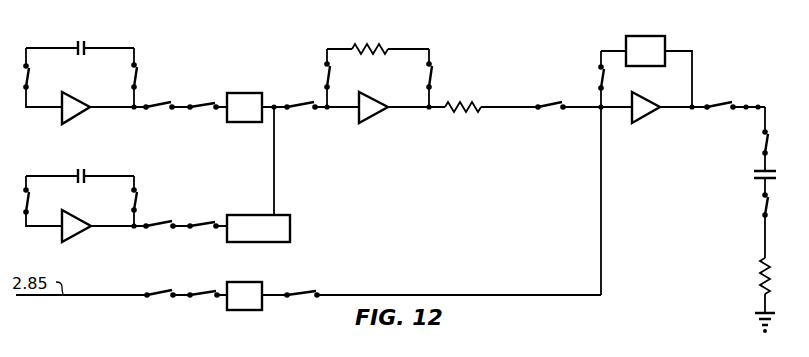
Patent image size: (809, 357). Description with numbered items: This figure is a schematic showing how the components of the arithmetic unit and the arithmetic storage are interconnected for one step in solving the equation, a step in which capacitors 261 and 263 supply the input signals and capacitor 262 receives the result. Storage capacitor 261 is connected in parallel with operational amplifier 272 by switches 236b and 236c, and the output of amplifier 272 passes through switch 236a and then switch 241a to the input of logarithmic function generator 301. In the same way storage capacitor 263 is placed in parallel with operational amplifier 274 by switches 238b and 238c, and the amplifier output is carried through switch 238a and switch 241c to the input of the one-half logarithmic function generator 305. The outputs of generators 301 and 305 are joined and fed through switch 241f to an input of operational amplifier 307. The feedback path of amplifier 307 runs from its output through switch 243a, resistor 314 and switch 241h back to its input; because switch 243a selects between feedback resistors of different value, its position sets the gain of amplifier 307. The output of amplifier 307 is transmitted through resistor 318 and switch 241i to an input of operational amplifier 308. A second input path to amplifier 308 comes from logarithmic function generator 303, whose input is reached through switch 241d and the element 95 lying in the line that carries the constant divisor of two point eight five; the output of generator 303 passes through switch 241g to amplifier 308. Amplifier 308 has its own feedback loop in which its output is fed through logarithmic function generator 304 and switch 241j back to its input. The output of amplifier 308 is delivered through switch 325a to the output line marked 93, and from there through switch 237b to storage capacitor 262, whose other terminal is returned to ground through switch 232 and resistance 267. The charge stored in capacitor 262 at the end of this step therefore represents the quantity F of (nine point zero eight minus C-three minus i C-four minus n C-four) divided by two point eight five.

The storage capacitor 261 is at (86, 46).
The switch 236c is at (32, 78).
The switch 236b is at (139, 78).
The operational amplifier 272 is at (62, 119).
The switch 236a is at (156, 112).
The switch 241a is at (216, 111).
The logarithmic function generator 301 is at (231, 123).
The storage capacitor 263 is at (86, 175).
The switch 238c is at (29, 196).
The switch 238b is at (137, 194).
The operational amplifier 274 is at (77, 221).
The switch 238a is at (153, 228).
The switch 241c is at (208, 228).
The 1/2 logarithmic function generator 305 is at (289, 215).
The switch 95 is at (151, 294).
The switch 241d is at (216, 294).
The logarithmic function generator 303 is at (256, 282).
The switch 241g is at (313, 294).
The switch 241f is at (304, 111).
The switch 241h is at (325, 78).
The resistor 314 is at (372, 52).
The switch 243a is at (434, 76).
The operational amplifier 307 is at (379, 114).
The resistor 318 is at (465, 113).
The switch 241i is at (549, 111).
The switch 241j is at (598, 69).
The logarithmic function generator 304 is at (657, 36).
The operational amplifier 308 is at (642, 116).
The switch 325a is at (716, 106).
The output terminal 93 is at (758, 107).
The switch 237b is at (766, 142).
The storage capacitor 262 is at (759, 172).
The switch 232 is at (761, 205).
The resistance 267 is at (759, 278).